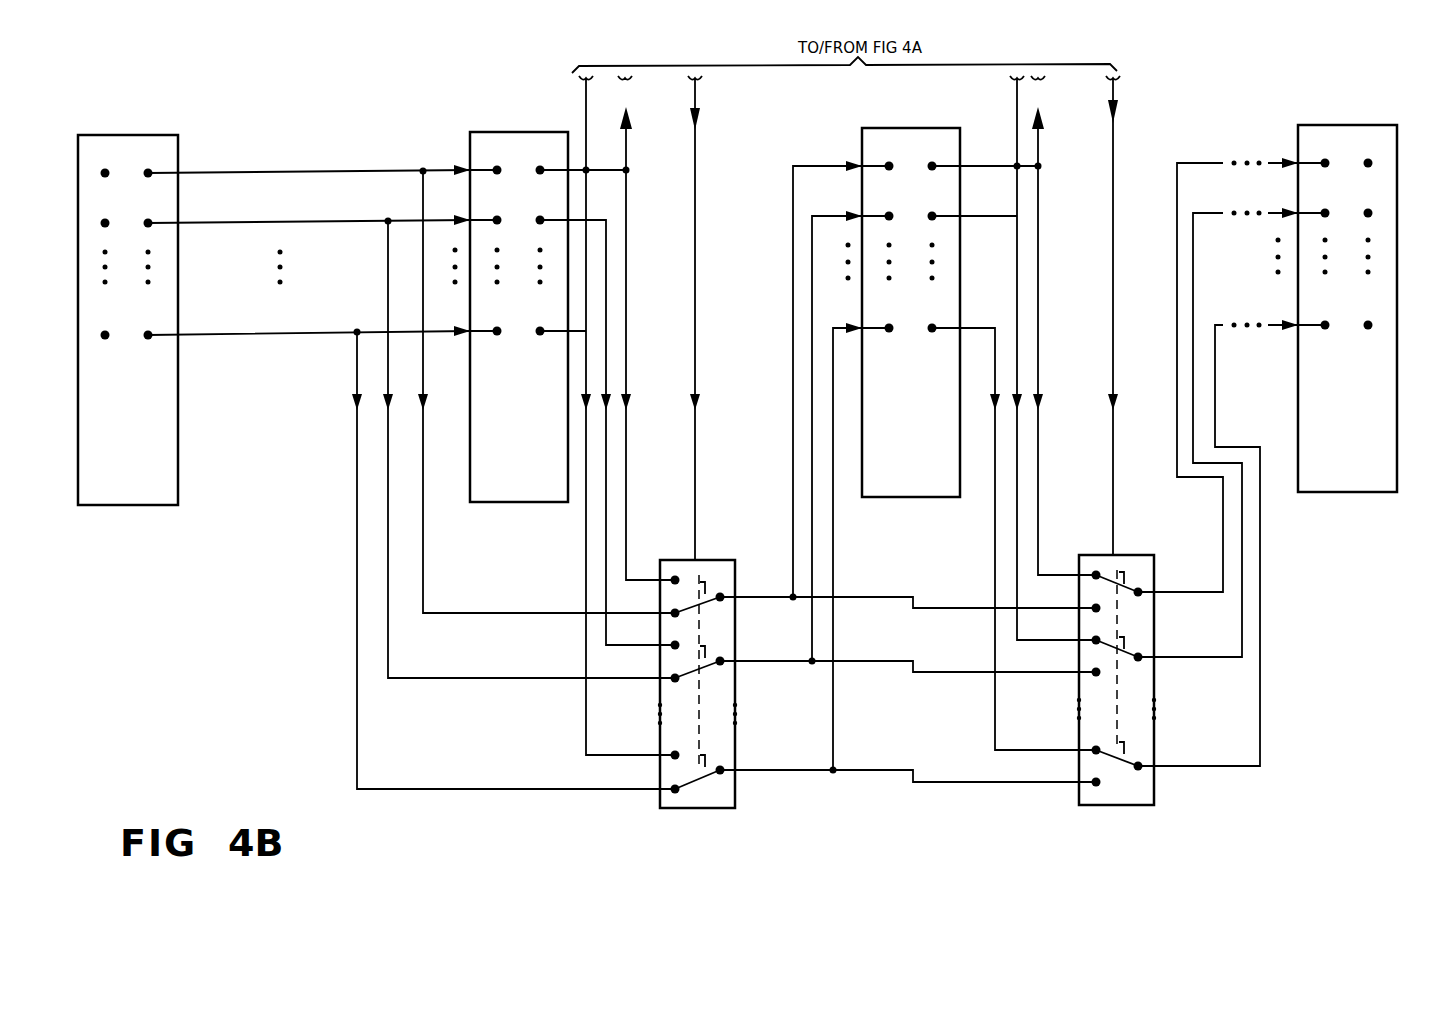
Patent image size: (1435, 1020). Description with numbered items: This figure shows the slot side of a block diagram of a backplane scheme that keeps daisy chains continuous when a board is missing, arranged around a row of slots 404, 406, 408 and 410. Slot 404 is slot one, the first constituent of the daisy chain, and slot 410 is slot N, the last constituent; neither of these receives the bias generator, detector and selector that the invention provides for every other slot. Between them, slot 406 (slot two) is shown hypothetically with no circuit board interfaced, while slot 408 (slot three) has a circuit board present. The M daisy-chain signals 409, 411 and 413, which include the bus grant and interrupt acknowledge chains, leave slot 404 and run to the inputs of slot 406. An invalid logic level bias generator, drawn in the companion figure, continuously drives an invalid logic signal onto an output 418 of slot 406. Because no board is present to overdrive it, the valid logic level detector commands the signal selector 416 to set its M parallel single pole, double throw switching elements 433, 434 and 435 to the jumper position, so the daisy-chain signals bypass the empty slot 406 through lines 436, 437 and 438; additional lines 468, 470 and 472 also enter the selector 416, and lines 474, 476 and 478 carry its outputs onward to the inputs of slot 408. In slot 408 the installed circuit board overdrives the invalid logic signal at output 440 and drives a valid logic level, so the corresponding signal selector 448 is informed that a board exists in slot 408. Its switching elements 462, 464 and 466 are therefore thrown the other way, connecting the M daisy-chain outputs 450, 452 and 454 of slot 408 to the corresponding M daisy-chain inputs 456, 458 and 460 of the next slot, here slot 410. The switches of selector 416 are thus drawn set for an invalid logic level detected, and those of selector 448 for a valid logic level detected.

The slot 404 is at (120, 505).
The slot 406 is at (510, 502).
The slot 408 is at (895, 497).
The daisy-chain signal 409 is at (385, 170).
The slot 410 is at (1365, 492).
The daisy-chain signal 411 is at (237, 224).
The daisy-chain signal 413 is at (238, 337).
The signal selector 416 is at (730, 684).
The output 418 is at (542, 172).
The switching element 433 is at (706, 620).
The switching element 434 is at (710, 680).
The switching element 435 is at (710, 752).
The line 436 is at (478, 614).
The line 437 is at (478, 679).
The line 438 is at (420, 788).
The output 440 is at (934, 168).
The signal selector 448 is at (1159, 683).
The daisy-chain output 450 is at (1042, 545).
The daisy-chain output 452 is at (1018, 622).
The daisy-chain output 454 is at (995, 722).
The daisy-chain input 456 is at (1177, 290).
The daisy-chain input 458 is at (1193, 403).
The daisy-chain input 460 is at (1260, 503).
The switching element 462 is at (1127, 602).
The switching element 464 is at (1130, 678).
The switching element 466 is at (1133, 745).
The selector input line 468 is at (588, 538).
The selector input line 470 is at (607, 478).
The selector input line 472 is at (627, 538).
The line to slot 3 input 474 is at (832, 410).
The line to slot 3 input 476 is at (810, 318).
The line to slot 3 input 478 is at (794, 243).